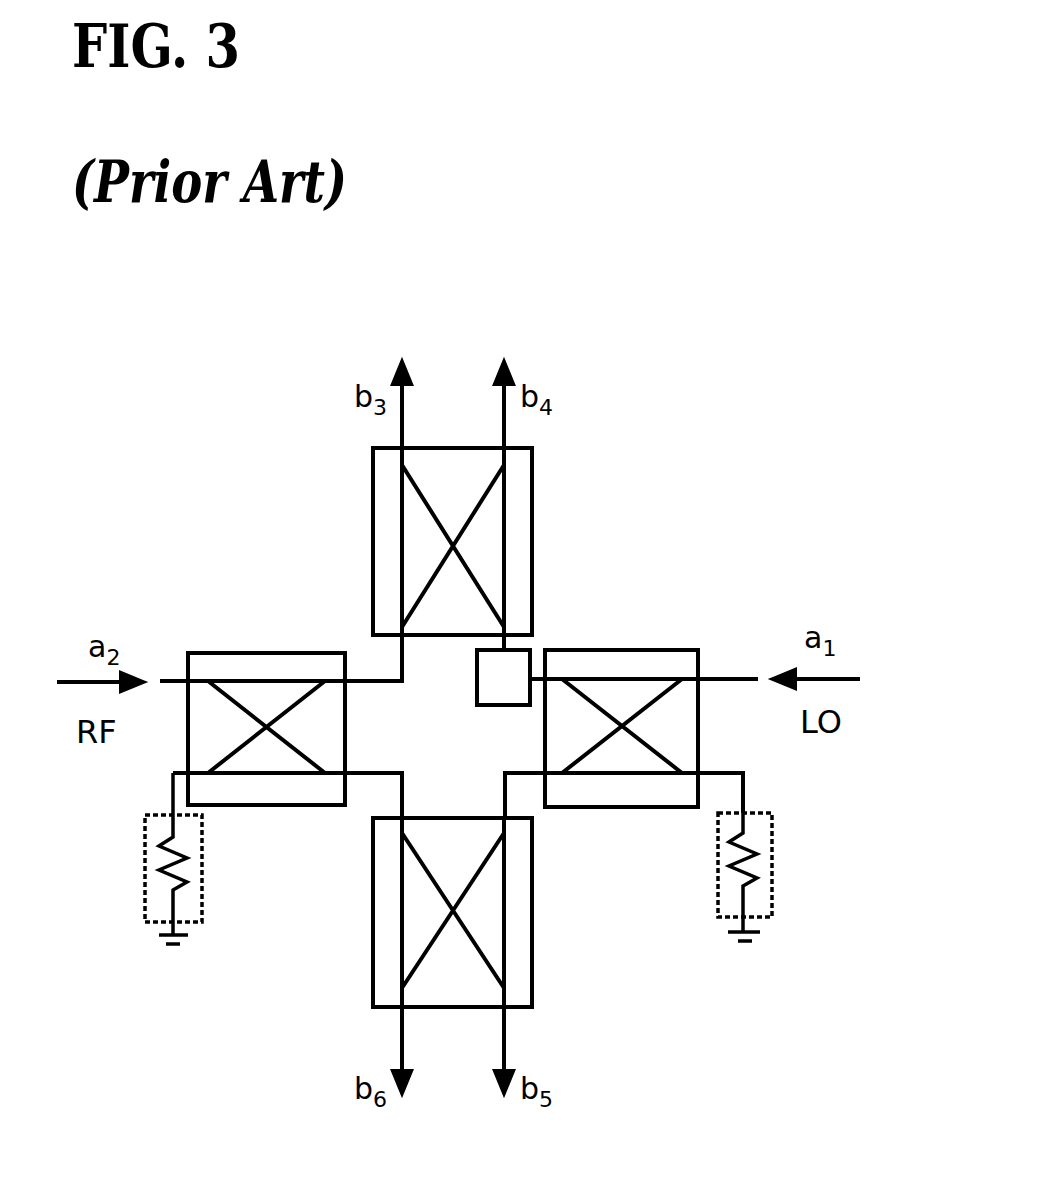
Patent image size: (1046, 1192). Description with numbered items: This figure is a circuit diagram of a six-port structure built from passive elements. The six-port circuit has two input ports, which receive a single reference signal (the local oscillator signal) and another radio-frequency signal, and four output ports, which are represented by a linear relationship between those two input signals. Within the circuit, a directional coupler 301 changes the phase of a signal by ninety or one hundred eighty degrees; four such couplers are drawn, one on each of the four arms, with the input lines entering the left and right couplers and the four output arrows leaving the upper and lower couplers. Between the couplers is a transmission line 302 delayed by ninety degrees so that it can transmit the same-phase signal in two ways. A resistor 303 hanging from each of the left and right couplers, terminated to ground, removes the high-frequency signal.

The directional coupler 301 is at (282, 653).
The transmission line 302 is at (530, 650).
The resistor 303 is at (145, 870).